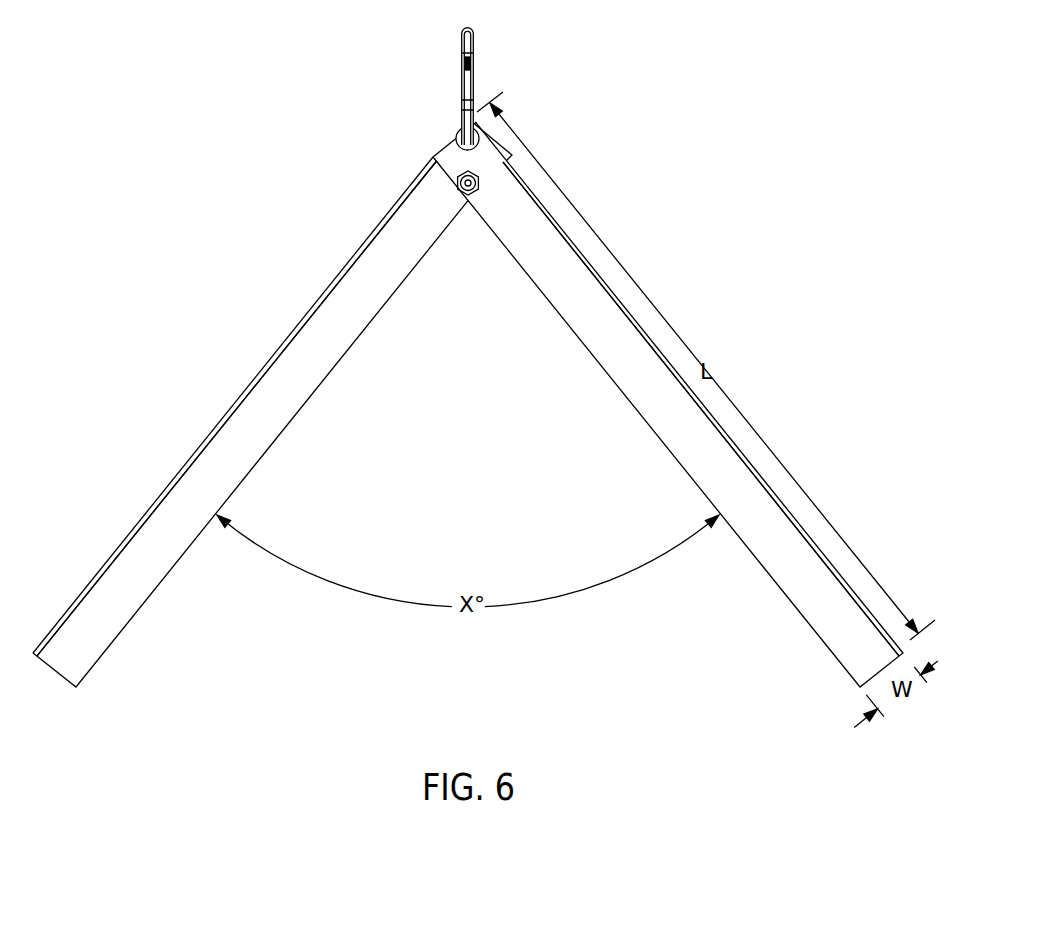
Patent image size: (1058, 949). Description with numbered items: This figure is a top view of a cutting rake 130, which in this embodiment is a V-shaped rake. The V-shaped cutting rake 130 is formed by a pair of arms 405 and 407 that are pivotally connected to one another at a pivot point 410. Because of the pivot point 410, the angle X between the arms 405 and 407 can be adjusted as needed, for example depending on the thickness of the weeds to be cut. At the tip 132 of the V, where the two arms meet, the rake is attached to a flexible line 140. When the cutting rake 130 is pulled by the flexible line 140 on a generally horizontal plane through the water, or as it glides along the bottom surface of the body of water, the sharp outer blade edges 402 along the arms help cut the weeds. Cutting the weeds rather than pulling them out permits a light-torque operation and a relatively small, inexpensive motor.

The cutting rake 130 is at (700, 173).
The tip 132 is at (458, 134).
The flexible line 140 is at (476, 68).
The sharp outer blade edges 402 is at (330, 280).
The arm 405 is at (665, 415).
The arm 407 is at (270, 415).
The pivot point 410 is at (459, 178).